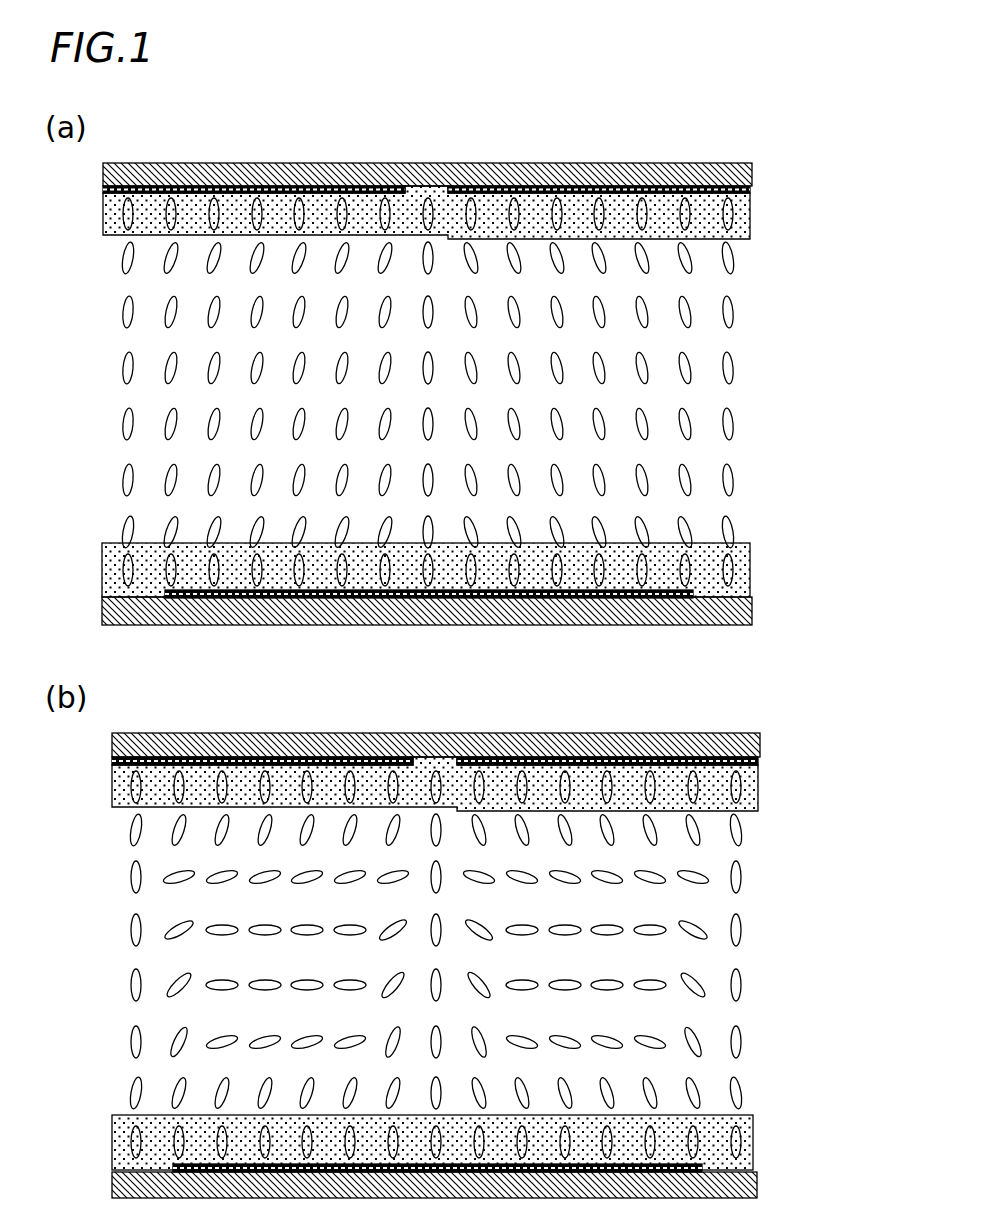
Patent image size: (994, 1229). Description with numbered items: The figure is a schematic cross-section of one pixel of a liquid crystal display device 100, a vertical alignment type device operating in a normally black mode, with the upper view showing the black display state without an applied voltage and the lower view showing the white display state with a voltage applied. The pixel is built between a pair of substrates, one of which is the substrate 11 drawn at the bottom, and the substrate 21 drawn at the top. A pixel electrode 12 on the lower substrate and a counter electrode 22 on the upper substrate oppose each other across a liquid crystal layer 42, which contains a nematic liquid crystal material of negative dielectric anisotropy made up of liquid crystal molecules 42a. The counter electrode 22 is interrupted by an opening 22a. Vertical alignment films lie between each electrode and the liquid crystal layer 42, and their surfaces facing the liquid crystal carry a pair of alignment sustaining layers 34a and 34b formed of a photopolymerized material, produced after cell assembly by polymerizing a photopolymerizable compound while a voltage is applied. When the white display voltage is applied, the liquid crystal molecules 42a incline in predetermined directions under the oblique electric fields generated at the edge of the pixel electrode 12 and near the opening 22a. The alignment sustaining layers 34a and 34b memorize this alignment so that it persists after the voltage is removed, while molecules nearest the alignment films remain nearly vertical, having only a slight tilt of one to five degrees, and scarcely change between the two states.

The liquid crystal display device 100 is at (845, 140).
The substrate 11 is at (753, 612).
The pixel electrode 12 is at (694, 594).
The second substrate 21 is at (752, 174).
The counter electrode 22 is at (750, 191).
The opening 22a is at (430, 178).
The alignment sustaining layer 34a is at (746, 570).
The alignment sustaining layer 34b is at (748, 216).
The liquid crystal layer 42 is at (491, 675).
The liquid crystal molecule 42a is at (734, 362).